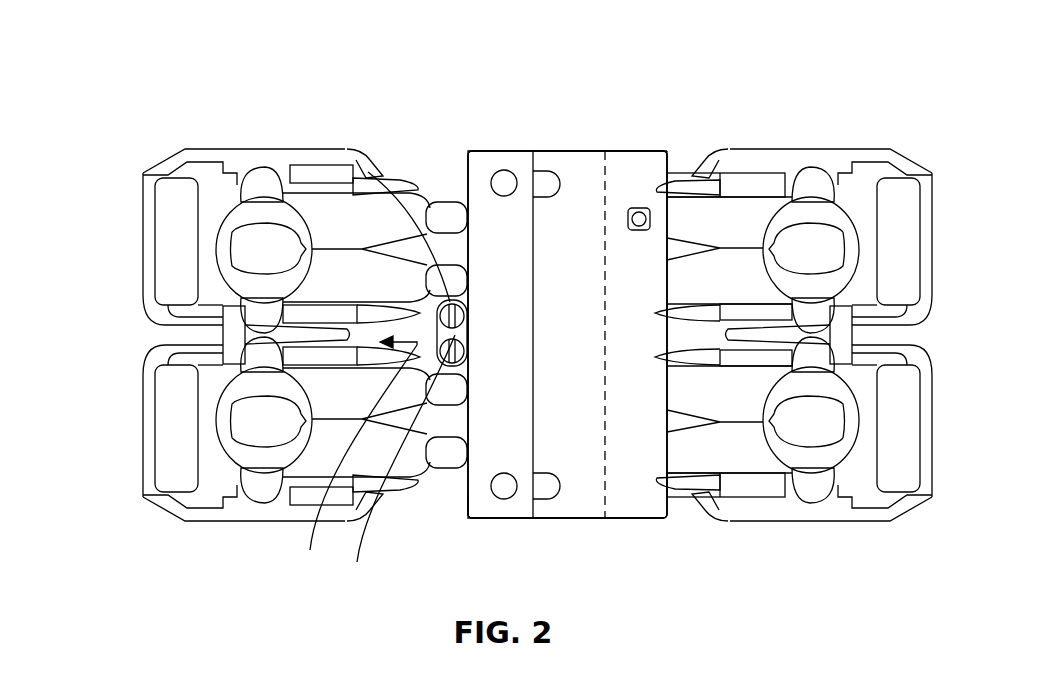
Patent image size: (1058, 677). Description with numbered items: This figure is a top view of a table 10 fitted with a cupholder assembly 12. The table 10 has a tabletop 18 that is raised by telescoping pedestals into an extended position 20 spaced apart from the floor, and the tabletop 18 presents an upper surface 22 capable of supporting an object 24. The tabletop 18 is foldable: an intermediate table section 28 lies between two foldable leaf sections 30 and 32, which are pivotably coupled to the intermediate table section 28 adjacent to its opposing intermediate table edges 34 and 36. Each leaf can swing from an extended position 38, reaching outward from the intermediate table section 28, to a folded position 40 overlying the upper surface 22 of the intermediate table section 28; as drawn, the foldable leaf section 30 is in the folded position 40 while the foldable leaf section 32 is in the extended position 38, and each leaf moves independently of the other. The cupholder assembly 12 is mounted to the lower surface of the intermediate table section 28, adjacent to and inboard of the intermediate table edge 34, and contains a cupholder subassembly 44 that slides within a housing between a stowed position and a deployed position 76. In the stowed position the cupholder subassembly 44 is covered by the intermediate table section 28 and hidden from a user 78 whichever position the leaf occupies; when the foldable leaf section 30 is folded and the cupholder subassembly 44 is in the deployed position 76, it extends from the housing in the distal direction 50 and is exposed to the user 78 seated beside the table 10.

The table 10 is at (572, 151).
The cupholder assembly 12 is at (470, 348).
The tabletop 18 is at (604, 518).
The extended position 20 is at (551, 124).
The upper surface 22 is at (583, 518).
The object 24 is at (641, 207).
The intermediate table section 28 is at (545, 518).
The foldable leaf section 30 is at (485, 518).
The foldable leaf section 32 is at (658, 518).
The intermediate table edge 34 is at (464, 510).
The intermediate table edge 36 is at (607, 173).
The extended position 38 is at (707, 132).
The folded position 40 is at (500, 133).
The cupholder subassembly 44 is at (397, 464).
The distal direction 50 is at (356, 459).
The deployed position 76 is at (357, 151).
The user 78 is at (233, 276).